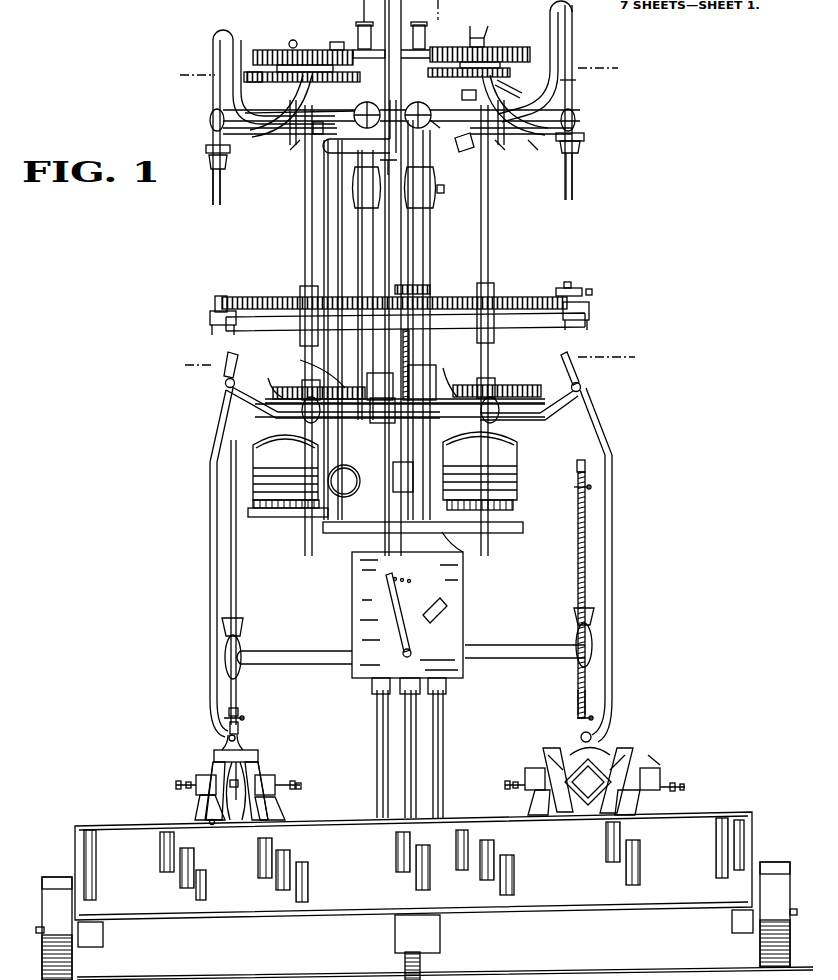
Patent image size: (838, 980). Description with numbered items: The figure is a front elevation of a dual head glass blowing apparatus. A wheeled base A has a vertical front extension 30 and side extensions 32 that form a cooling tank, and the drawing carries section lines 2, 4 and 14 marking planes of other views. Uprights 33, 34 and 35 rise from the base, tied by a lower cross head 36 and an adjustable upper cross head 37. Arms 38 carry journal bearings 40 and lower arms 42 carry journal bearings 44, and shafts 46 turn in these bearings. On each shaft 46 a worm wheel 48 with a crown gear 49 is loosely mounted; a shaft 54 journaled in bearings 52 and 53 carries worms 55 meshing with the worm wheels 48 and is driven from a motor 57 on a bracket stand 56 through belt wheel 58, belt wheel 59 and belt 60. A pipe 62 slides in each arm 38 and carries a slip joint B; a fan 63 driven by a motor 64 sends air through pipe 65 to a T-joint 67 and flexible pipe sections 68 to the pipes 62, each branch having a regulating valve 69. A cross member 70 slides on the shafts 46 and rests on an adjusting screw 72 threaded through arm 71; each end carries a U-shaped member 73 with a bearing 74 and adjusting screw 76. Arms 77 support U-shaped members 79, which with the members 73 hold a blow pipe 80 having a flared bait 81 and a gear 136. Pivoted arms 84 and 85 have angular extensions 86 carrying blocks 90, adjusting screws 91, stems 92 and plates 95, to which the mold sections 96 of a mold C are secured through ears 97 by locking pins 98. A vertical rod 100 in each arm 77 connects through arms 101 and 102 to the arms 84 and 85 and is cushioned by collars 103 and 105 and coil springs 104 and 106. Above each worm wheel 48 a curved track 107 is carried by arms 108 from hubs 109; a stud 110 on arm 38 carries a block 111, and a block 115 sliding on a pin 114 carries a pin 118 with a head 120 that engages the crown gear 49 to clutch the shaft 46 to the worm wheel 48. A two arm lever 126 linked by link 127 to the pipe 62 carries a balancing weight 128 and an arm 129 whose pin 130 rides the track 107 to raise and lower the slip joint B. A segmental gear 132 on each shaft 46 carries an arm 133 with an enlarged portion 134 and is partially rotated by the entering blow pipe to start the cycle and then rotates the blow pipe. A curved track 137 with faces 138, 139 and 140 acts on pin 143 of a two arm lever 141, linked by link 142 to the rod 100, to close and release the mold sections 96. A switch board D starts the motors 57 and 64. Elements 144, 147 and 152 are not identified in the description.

The section line 2— 2 is at (434, 10).
The section line 4— 4 is at (397, 71).
The section line 14— 14 is at (410, 362).
The vertical front extension 30 is at (505, 905).
The vertical side extensions 32 is at (75, 845).
The upright 33 is at (377, 770).
The upright 34 is at (440, 790).
The upright 35 is at (412, 770).
The cross head 36 is at (447, 685).
The cross head 37 is at (433, 205).
The arms 38 is at (245, 134).
The journal bearings 40 is at (293, 145).
The arms 42 is at (340, 415).
The journal bearings 44 is at (305, 418).
The shafts 46 is at (305, 256).
The worm wheel 48 is at (272, 51).
The crown gear 49 is at (335, 44).
The journal bearing 52 is at (424, 40).
The journal bearing 53 is at (358, 50).
The shaft 54 is at (378, 34).
The worms 55 is at (293, 40).
The bracket stand 56 is at (505, 533).
The motor 57 is at (517, 488).
The belt wheel 58 is at (395, 490).
The belt wheel 59 is at (400, 34).
The belt 60 is at (403, 270).
The pipe 62 is at (213, 88).
The fan 63 is at (318, 517).
The motor 64 is at (280, 490).
The pipe 65 is at (340, 230).
The distributing T-joint 67 is at (400, 150).
The flexible pipe sections 68 is at (234, 40).
The air pressure regulating valve 69 is at (360, 108).
The cross member 70 is at (520, 327).
The arm 71 is at (401, 377).
The adjusting screw 72 is at (410, 360).
The U-shaped member 73 is at (210, 318).
The bearing 74 is at (214, 334).
The adjusting screw 76 is at (592, 290).
The arms 77 is at (228, 660).
The U-shaped members 79 is at (243, 626).
The blow pipe 80 is at (237, 592).
The flared bait 81 is at (238, 712).
The arm 84 is at (276, 810).
The arm 85 is at (212, 826).
The angular extension 86 is at (200, 776).
The block 90 is at (202, 797).
The adjusting screw 91 is at (176, 786).
The stem 92 is at (265, 768).
The plate 95 is at (510, 786).
The mold sections 96 is at (552, 752).
The spaced ears 97 is at (632, 802).
The locking pin 98 is at (655, 760).
The vertical rod 100 is at (238, 728).
The arm 101 is at (240, 745).
The arm 102 is at (214, 752).
The adjustable collar 103 is at (578, 490).
The coil spring 104 is at (578, 578).
The adjustable collar 105 is at (244, 718).
The coil spring 106 is at (578, 690).
The curved track 107 is at (280, 82).
The arms 108 is at (479, 24).
The hubs 109 is at (501, 24).
The stud 110 is at (285, 125).
The block 111 is at (508, 88).
The pin 114 is at (305, 100).
The block 115 is at (300, 78).
The pin 118 is at (440, 131).
The head 120 is at (318, 50).
The two arm lever 126 is at (290, 148).
The link 127 is at (210, 128).
The balancing weight 128 is at (318, 134).
The arm 129 is at (536, 150).
The engaging pin 130 is at (576, 80).
The segmental gear 132 is at (255, 297).
The arm 133 is at (430, 288).
The enlarged portion 134 is at (566, 282).
The gear 136 is at (215, 300).
The curved track 137 is at (297, 384).
The face 138 is at (278, 401).
The face 139 is at (278, 390).
The face 140 is at (236, 364).
The two arm lever 141 is at (568, 410).
The link 142 is at (211, 478).
The pin 143 is at (303, 362).
The block 144 is at (206, 152).
The block 147 is at (209, 165).
The stem 152 is at (220, 180).
The wheeled base A is at (640, 915).
The slip joint B is at (399, 185).
The mold C is at (216, 752).
The switch board D is at (463, 606).